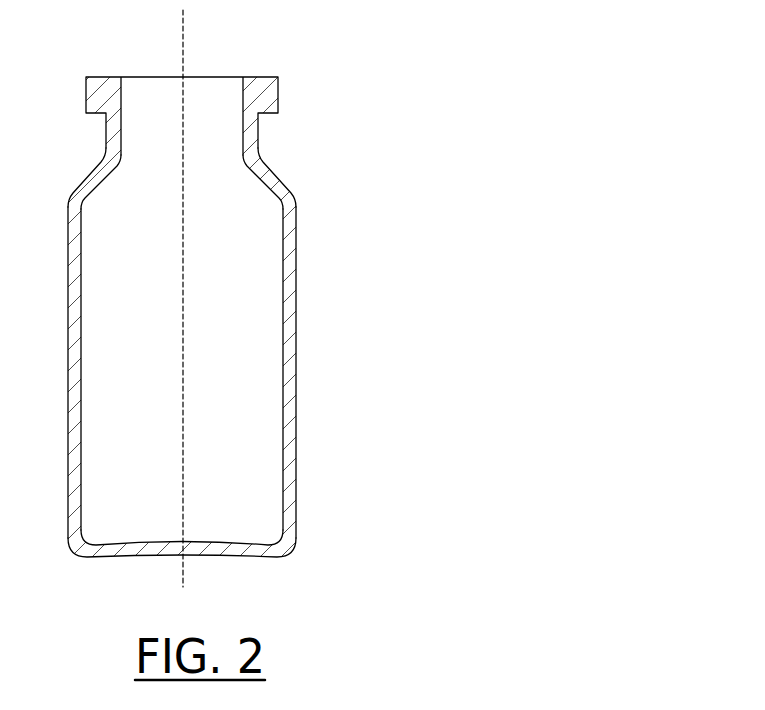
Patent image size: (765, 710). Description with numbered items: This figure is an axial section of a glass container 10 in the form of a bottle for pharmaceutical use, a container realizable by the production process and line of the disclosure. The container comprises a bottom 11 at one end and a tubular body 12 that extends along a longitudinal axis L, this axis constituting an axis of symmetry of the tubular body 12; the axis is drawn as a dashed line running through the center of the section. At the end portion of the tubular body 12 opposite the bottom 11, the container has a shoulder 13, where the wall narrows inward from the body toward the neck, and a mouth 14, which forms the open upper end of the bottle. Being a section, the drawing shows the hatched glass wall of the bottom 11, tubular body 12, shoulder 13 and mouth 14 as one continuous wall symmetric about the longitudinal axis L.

The glass container 10 is at (382, 300).
The bottom 11 is at (227, 554).
The tubular body 12 is at (295, 405).
The shoulder 13 is at (275, 168).
The mouth 14 is at (278, 92).
The longitudinal axis L is at (188, 47).